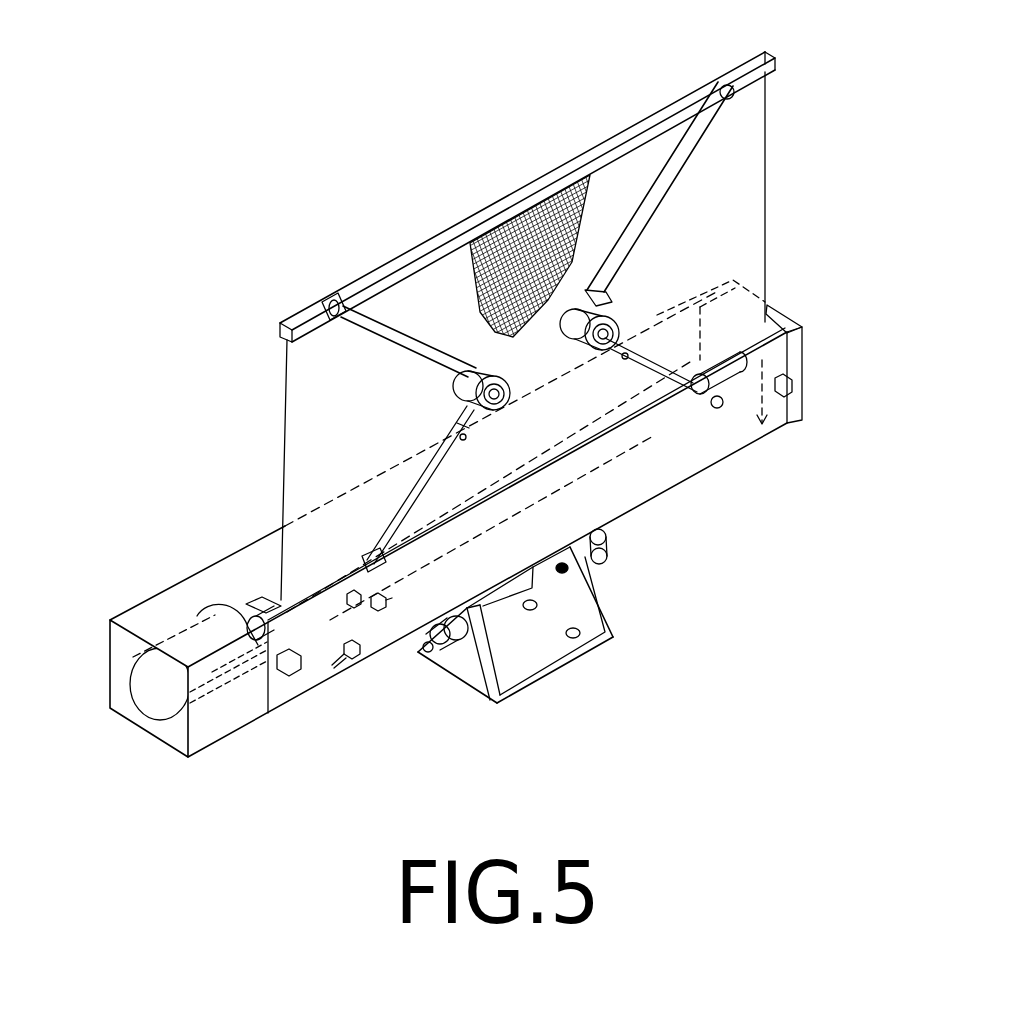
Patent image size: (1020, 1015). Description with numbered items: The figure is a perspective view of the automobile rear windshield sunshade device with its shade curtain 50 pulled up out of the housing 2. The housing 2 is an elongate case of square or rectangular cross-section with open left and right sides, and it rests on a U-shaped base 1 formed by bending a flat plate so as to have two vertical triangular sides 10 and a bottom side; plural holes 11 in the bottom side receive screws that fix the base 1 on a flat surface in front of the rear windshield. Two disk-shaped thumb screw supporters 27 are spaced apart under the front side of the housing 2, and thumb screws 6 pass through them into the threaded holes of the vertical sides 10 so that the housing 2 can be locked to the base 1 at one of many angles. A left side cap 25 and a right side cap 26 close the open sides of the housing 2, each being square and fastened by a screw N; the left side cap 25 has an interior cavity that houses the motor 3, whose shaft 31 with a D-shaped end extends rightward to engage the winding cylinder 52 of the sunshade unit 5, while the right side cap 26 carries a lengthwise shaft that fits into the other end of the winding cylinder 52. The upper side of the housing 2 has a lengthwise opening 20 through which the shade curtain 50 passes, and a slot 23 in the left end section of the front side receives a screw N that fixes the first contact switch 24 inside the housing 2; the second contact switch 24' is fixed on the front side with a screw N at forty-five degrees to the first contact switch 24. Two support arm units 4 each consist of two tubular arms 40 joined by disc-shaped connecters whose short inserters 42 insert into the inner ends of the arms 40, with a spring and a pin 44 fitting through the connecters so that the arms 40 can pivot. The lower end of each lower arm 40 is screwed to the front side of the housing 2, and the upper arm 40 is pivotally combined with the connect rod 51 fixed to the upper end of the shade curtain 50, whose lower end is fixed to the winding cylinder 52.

The U-shaped base 1 is at (547, 697).
The housing 2 is at (710, 468).
The motor 3 is at (170, 688).
The support arm unit 4 is at (443, 338).
The sunshade unit 5 is at (582, 145).
The thumb screw 6 is at (606, 534).
The vertical triangular side 10 is at (580, 600).
The hole 11 is at (582, 634).
The lengthwise opening 20 is at (261, 600).
The slot 23 is at (332, 665).
The first contact switch 24 is at (357, 683).
The second contact switch 24' is at (396, 682).
The left side cap 25 is at (155, 605).
The right side cap 26 is at (803, 367).
The thumb screw supporter 27 is at (480, 695).
The shaft 31 is at (243, 603).
The tubular arm 40 is at (680, 161).
The short inserter 42 is at (606, 290).
The pin 44 is at (670, 313).
The shade curtain 50 is at (520, 250).
The connect rod 51 is at (282, 327).
The winding cylinder 52 is at (322, 578).
The screw N is at (287, 677).